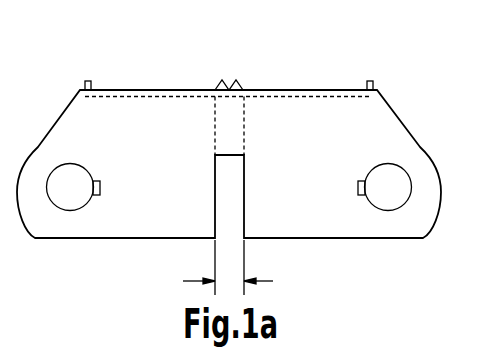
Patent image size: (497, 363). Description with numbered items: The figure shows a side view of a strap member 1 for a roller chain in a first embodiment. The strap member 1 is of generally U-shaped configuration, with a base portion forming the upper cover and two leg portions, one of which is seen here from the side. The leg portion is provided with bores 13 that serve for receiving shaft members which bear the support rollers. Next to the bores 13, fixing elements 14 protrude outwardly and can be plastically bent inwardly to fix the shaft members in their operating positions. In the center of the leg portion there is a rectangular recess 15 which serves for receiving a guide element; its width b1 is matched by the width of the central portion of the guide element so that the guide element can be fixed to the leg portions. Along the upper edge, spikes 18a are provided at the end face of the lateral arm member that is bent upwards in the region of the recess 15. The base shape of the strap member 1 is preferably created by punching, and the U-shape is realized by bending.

The strap member 1 is at (157, 63).
The spikes 18a is at (237, 64).
The bores 13 is at (68, 188).
The fixing elements 14 is at (100, 188).
The rectangular recesses 15 is at (230, 187).
The width of the rectangular recesses b1 is at (228, 282).